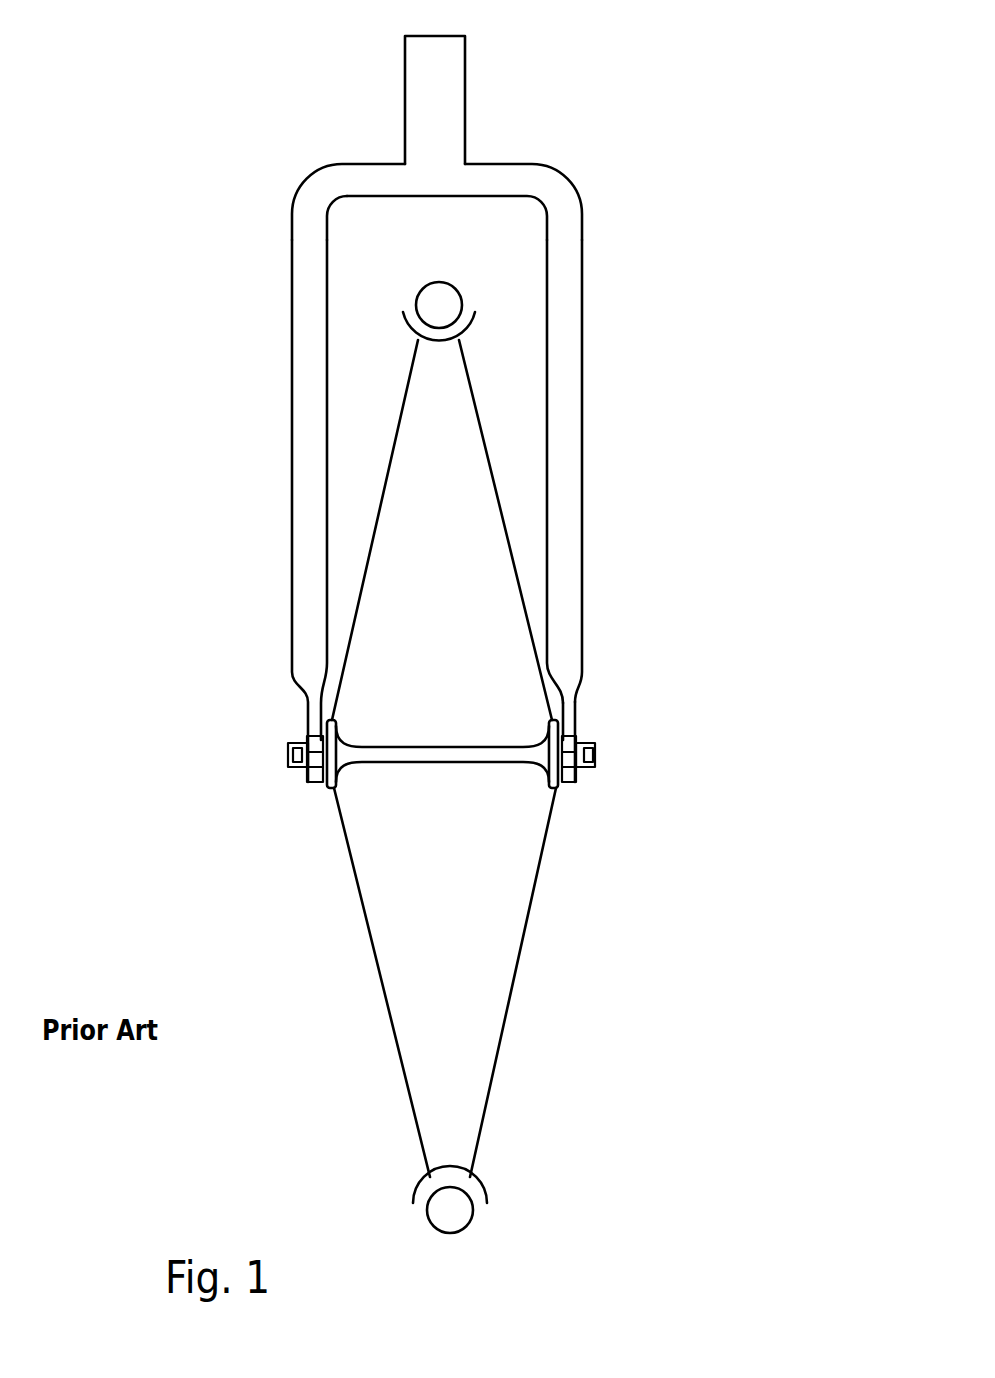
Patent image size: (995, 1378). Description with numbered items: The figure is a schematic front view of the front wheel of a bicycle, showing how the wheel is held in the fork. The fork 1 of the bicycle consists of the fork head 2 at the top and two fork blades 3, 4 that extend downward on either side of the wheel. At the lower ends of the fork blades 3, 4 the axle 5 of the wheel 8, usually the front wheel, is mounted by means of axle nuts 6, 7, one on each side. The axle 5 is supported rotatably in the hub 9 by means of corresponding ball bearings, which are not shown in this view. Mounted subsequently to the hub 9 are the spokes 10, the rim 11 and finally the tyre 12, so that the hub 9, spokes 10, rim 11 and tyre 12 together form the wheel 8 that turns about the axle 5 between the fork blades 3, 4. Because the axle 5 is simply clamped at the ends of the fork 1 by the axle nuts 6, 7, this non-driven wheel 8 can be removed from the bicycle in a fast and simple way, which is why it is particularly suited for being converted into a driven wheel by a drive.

The fork 1 is at (474, 544).
The fork head 2 is at (437, 83).
The fork blade 3 is at (568, 478).
The fork blade 4 is at (318, 467).
The axle 5 is at (563, 790).
The axle nut 6 is at (585, 742).
The axle nut 7 is at (290, 744).
The wheel 8 is at (473, 1046).
The hub 9 is at (437, 757).
The spokes 10 is at (488, 1088).
The rim 11 is at (418, 1188).
The tyre 12 is at (448, 1208).